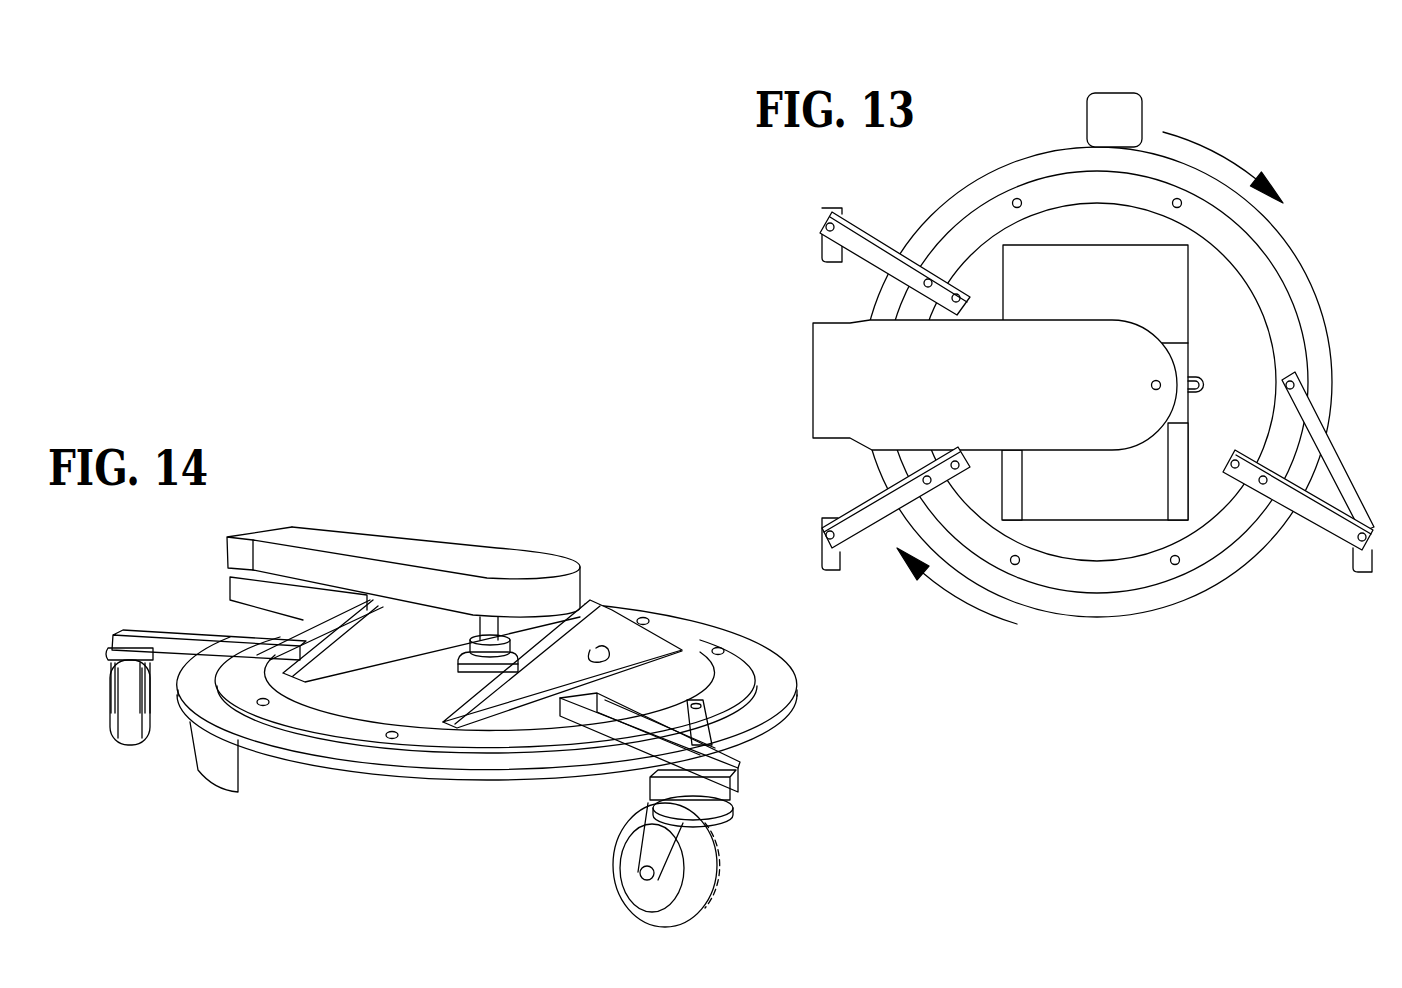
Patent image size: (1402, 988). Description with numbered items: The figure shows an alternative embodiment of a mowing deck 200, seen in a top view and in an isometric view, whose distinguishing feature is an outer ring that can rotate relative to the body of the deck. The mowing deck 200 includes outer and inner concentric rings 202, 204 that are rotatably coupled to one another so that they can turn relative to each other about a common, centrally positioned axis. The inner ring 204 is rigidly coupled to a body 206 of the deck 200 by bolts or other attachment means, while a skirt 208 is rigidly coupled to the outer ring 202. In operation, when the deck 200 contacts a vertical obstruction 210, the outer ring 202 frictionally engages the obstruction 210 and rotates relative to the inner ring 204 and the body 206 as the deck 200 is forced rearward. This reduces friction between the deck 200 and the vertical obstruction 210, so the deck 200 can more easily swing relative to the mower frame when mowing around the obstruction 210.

In FIG. 13, the mowing deck 200 is at (1292, 233).
In FIG. 14, the mowing deck 200 is at (797, 707).
In FIG. 13, the outer ring 202 is at (1220, 570).
In FIG. 14, the outer ring 202 is at (320, 742).
In FIG. 13, the inner ring 204 is at (1152, 568).
In FIG. 14, the inner ring 204 is at (423, 738).
In FIG. 13, the body 206 is at (1085, 525).
In FIG. 14, the body 206 is at (523, 720).
In FIG. 14, the skirt 208 is at (218, 766).
In FIG. 13, the vertical obstruction 210 is at (1140, 93).